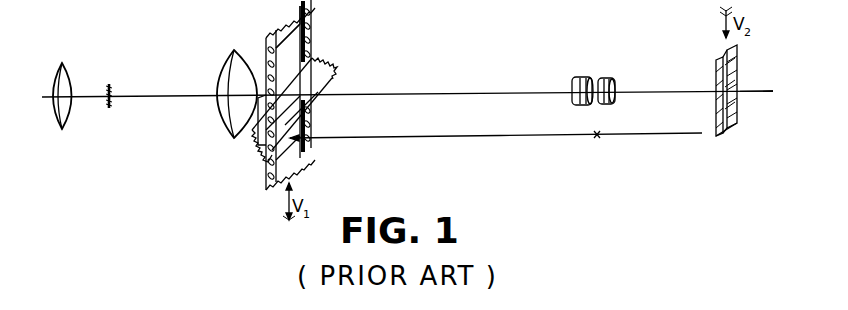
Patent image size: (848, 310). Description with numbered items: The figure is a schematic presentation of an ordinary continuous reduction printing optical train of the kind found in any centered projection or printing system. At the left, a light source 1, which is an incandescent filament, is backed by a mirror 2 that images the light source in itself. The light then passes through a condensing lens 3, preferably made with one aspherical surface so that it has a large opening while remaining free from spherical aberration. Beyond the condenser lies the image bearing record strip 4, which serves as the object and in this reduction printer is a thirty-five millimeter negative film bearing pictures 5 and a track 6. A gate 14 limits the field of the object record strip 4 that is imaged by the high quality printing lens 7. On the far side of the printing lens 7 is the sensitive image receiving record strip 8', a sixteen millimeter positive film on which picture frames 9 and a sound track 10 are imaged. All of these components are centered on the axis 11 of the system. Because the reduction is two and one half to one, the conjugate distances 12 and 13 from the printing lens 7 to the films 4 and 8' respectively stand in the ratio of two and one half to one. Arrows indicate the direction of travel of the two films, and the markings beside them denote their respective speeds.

The light source 1 is at (109, 106).
The mirror 2 is at (68, 96).
The condensing lens 3 is at (230, 94).
The image bearing record strip 4 is at (272, 166).
The pictures 5 is at (262, 120).
The track 6 is at (305, 44).
The printing lens 7 is at (596, 98).
The image receiving record strip 8' is at (707, 96).
The picture frames 9 is at (735, 88).
The sound track 10 is at (724, 128).
The axis 11 is at (757, 93).
The conjugate distance 12 is at (455, 138).
The conjugate distance 13 is at (645, 135).
The gate 14 is at (318, 62).